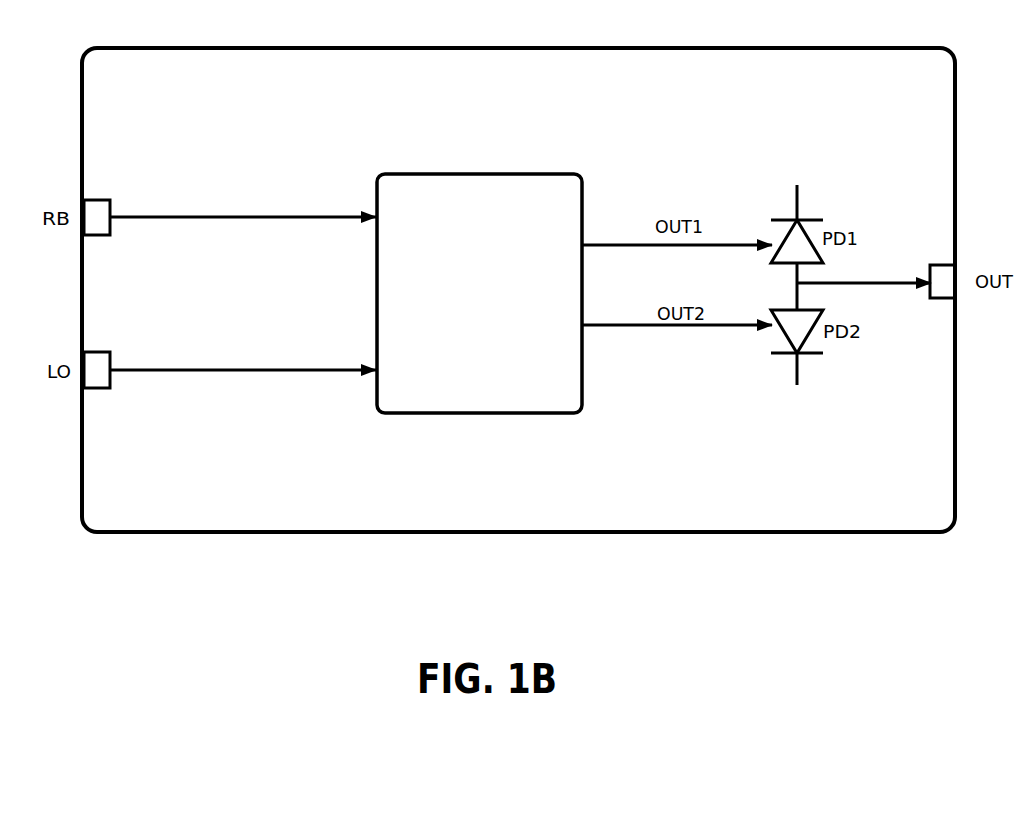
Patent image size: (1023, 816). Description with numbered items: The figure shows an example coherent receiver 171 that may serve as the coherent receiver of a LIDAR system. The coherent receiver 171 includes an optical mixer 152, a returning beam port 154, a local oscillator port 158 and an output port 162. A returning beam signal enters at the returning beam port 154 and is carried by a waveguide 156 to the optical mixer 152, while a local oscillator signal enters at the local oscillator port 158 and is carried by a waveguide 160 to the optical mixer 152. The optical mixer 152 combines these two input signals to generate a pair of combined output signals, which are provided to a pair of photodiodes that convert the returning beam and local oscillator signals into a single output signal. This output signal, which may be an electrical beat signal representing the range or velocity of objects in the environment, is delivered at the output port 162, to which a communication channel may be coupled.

The coherent receiver 171 is at (518, 290).
The returning beam port 154 is at (103, 200).
The waveguide 156 is at (297, 216).
The local oscillator port 158 is at (103, 352).
The waveguide 160 is at (299, 369).
The optical mixer 152 is at (479, 293).
The output port 162 is at (936, 265).